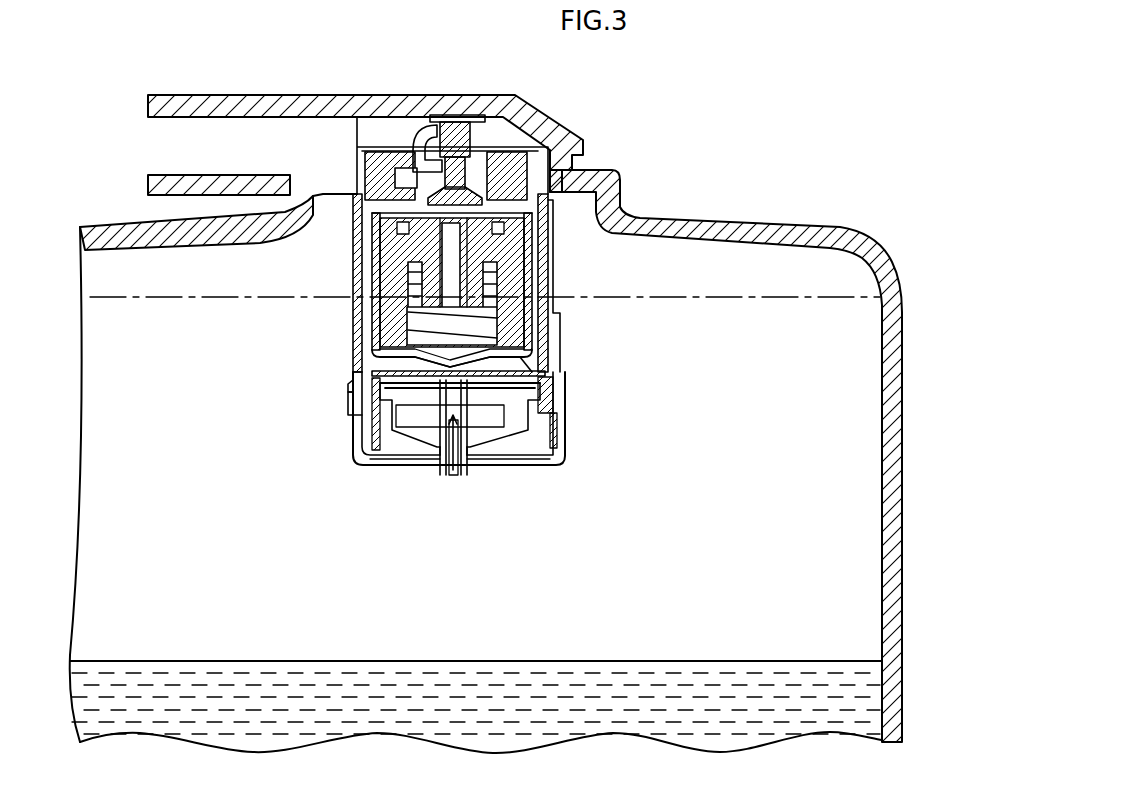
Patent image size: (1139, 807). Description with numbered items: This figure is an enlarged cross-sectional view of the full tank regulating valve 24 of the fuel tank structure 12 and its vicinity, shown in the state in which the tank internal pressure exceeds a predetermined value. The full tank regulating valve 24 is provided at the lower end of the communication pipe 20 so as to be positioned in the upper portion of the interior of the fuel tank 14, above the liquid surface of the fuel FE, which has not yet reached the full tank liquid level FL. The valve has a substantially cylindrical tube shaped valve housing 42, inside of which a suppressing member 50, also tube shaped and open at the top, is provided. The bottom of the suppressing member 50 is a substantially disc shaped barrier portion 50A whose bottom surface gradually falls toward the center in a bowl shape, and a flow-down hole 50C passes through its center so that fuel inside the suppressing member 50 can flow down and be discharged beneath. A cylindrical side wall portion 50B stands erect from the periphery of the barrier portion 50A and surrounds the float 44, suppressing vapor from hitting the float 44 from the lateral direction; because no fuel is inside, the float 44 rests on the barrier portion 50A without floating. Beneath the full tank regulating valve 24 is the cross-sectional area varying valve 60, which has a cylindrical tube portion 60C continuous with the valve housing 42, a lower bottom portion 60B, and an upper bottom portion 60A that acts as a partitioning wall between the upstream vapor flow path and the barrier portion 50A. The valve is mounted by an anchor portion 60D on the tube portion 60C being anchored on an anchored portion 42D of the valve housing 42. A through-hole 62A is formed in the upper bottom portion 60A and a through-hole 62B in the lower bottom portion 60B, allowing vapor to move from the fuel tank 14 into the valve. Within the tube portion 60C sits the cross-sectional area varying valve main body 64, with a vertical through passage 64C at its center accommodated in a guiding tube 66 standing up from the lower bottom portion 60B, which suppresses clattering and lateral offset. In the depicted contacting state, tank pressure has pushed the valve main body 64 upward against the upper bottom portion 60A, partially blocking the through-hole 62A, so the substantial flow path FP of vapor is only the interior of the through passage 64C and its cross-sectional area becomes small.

The fuel tank structure 12 is at (1061, 691).
The fuel tank 14 is at (912, 706).
The communication pipe 20 is at (245, 103).
The full tank regulating valve 24 is at (324, 305).
The valve housing 42 is at (343, 241).
The anchored portion 42D is at (355, 375).
The float 44 is at (527, 269).
The suppressing member 50 is at (372, 268).
The barrier portion 50A is at (520, 365).
The side wall portion 50B is at (530, 285).
The flow-down hole 50C is at (440, 368).
The cross-sectional area varying valve 60 is at (321, 450).
The upper bottom portion 60A is at (532, 375).
The lower bottom portion 60B is at (515, 465).
The tube portion 60C is at (566, 428).
The anchor portion 60D is at (353, 400).
The through-hole 62A is at (500, 390).
The through-hole 62B is at (405, 470).
The cross-sectional area varying valve main body 64 is at (372, 441).
The through passage 64C is at (464, 440).
The guiding tube 66 is at (441, 466).
The fuel FE is at (263, 678).
The full tank liquid level FL is at (213, 297).
The flow path FP is at (453, 478).